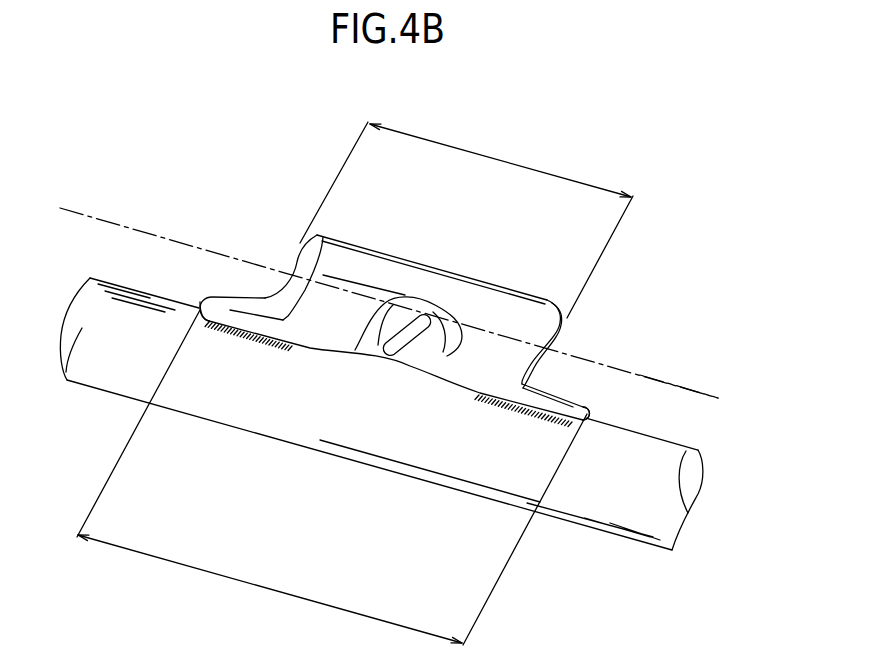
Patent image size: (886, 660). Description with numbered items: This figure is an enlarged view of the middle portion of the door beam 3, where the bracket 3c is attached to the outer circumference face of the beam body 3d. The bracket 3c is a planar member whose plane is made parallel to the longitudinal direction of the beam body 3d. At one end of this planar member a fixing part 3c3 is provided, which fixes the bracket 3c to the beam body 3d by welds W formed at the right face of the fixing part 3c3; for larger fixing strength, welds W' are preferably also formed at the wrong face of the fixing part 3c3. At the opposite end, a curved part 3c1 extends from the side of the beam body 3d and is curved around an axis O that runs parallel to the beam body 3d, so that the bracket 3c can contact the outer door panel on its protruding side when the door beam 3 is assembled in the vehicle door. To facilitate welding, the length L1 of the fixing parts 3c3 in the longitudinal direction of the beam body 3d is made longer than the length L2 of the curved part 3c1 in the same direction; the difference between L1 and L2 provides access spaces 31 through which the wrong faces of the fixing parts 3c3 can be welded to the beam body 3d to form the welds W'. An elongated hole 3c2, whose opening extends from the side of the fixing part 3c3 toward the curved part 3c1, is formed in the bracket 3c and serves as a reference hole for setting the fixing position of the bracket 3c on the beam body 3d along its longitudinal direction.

The door beam 3 is at (603, 280).
The bracket 3c is at (363, 246).
The curved part 3c1 is at (288, 262).
The elongated hole 3c2 is at (413, 318).
The fixing part 3c3 is at (362, 419).
The beam body 3d is at (353, 435).
The access space 31 is at (253, 255).
The weld W is at (377, 439).
The weld W' is at (362, 336).
The axis O is at (716, 395).
The length of the fixing parts L1 is at (332, 477).
The length of the curved part L2 is at (466, 220).